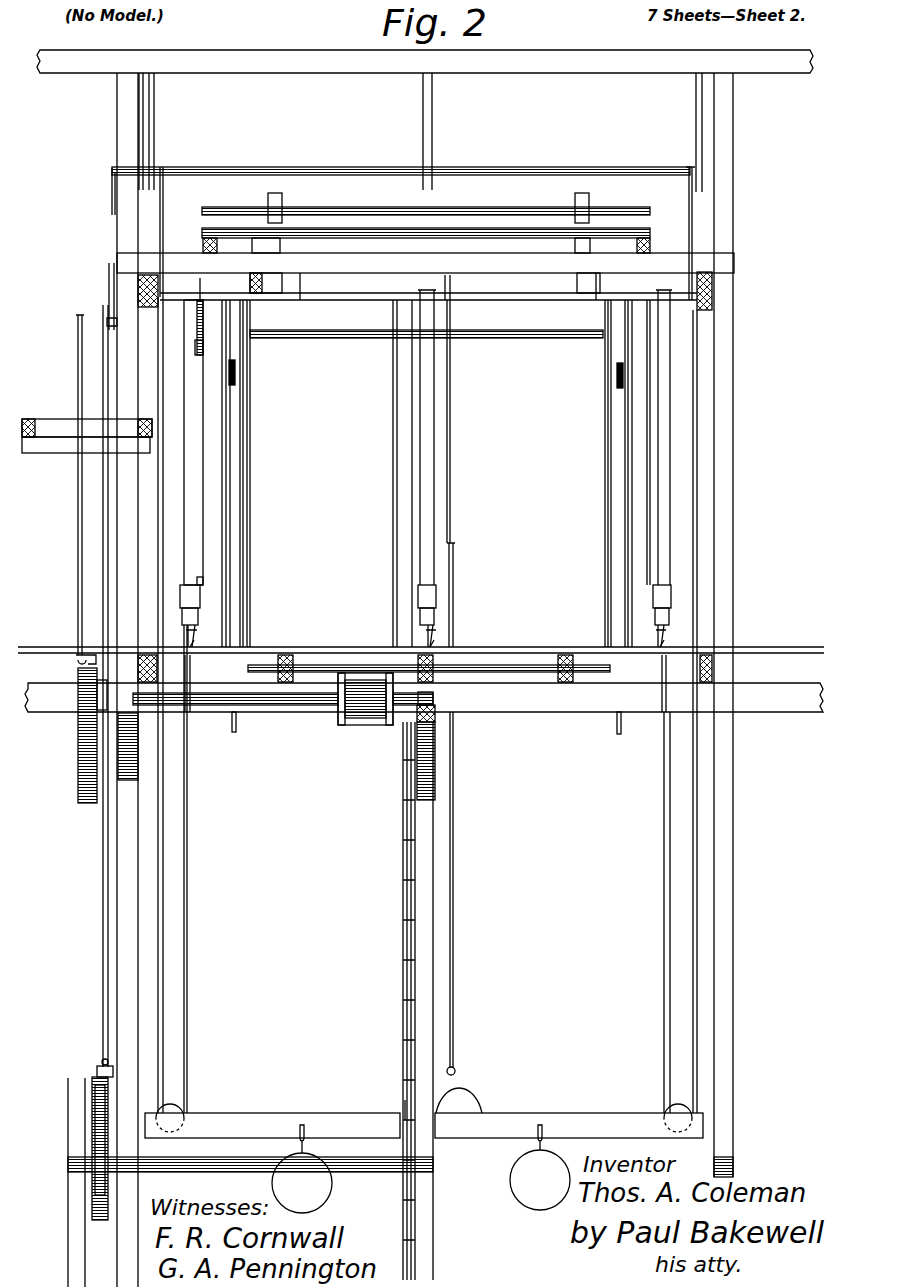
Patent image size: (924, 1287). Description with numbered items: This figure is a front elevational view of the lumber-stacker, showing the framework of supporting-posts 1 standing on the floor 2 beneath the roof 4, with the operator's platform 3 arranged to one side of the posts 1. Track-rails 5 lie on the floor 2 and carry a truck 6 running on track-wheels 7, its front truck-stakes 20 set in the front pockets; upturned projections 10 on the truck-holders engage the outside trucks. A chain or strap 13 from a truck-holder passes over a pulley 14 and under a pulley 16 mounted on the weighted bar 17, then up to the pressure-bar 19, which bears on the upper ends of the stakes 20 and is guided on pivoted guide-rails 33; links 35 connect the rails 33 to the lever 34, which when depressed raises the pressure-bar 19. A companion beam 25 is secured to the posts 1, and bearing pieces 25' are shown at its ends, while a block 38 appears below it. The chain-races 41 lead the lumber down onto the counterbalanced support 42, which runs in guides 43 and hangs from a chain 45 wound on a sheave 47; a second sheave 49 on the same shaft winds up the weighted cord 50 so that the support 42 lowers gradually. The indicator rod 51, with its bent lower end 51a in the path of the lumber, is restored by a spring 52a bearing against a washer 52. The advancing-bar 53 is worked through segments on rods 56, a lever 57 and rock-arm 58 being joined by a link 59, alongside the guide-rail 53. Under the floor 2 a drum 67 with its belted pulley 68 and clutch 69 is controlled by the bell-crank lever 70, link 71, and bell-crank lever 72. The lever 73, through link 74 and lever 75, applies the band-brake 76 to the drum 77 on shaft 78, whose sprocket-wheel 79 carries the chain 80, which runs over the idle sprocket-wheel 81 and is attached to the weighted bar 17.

The supporting-posts 1 is at (116, 232).
The floor or platform 2 is at (46, 643).
The platform 3 is at (42, 419).
The roof 4 is at (425, 62).
The track-rails 5 is at (197, 647).
The truck 6 is at (182, 612).
The track-wheels 7 is at (198, 637).
The upturned projections 10 is at (186, 640).
The chain or strap 13 is at (188, 956).
The pulley 14 is at (196, 665).
The pulley 16 is at (178, 1108).
The weighted bar 17 is at (424, 1126).
The pressure-bar 19 is at (352, 300).
The front truck-stakes 20 is at (192, 465).
The companion beam 25 is at (425, 263).
The bearing block 25' is at (424, 240).
The guide-rails 33 is at (152, 290).
The lever 34 is at (110, 197).
The links 35 is at (164, 200).
The guide block 38 is at (282, 286).
The chain-races 41 is at (282, 200).
The counterbalanced support 42 is at (236, 369).
The guides 43 is at (222, 553).
The chain or cord 45 is at (244, 315).
The sheave 47 is at (238, 723).
The sheave 49 is at (455, 726).
The weighted cord or chain 50 is at (455, 879).
The rod 51 is at (200, 428).
The bent lower end 51a is at (199, 583).
The washer 52 is at (197, 308).
The spring 52a is at (198, 346).
The advancing-bar 53 is at (251, 503).
The rod 56 is at (340, 338).
The lever 57 is at (455, 562).
The rock-arm 58 is at (453, 313).
The link 59 is at (452, 422).
The drum 67 is at (283, 699).
The belted pulley 68 is at (78, 725).
The clutch 69 is at (125, 738).
The bell-crank lever 70 is at (88, 655).
The link 71 is at (78, 505).
The bell-crank lever 72 is at (78, 360).
The lever 73 is at (109, 296).
The link 74 is at (104, 545).
The lever 75 is at (100, 1062).
The band-brake 76 is at (96, 1108).
The drum 77 is at (95, 1150).
The shaft 78 is at (198, 1172).
The sprocket-wheel 79 is at (403, 1085).
The chain 80 is at (404, 940).
The idle sprocket-wheel 81 is at (403, 795).